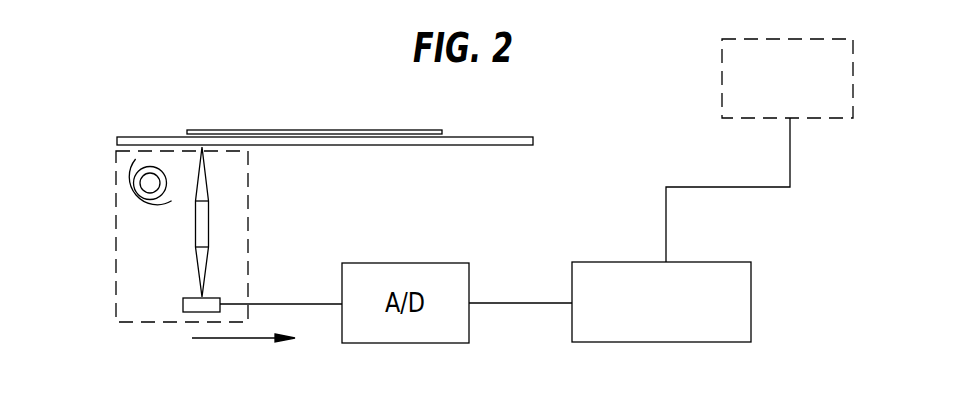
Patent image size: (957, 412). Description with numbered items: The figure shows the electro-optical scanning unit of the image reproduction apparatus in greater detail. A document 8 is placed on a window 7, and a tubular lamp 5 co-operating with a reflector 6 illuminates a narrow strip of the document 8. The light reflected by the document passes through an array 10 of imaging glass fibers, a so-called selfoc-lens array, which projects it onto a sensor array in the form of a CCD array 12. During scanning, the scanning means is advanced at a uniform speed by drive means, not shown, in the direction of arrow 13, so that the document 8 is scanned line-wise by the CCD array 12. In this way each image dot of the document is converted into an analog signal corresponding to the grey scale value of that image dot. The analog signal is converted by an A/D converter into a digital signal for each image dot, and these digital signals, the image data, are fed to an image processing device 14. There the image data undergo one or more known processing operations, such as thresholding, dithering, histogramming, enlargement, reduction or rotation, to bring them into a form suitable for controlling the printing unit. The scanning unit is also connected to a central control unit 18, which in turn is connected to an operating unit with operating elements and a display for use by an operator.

The tubular lamp 5 is at (133, 177).
The reflector 6 is at (136, 204).
The window 7 is at (510, 145).
The document 8 is at (343, 130).
The array of imaging glass fibers 10 is at (208, 227).
The CCD array 12 is at (185, 312).
The arrow 13 is at (233, 340).
The image processing device 14 is at (751, 268).
The central control unit 18 is at (757, 38).